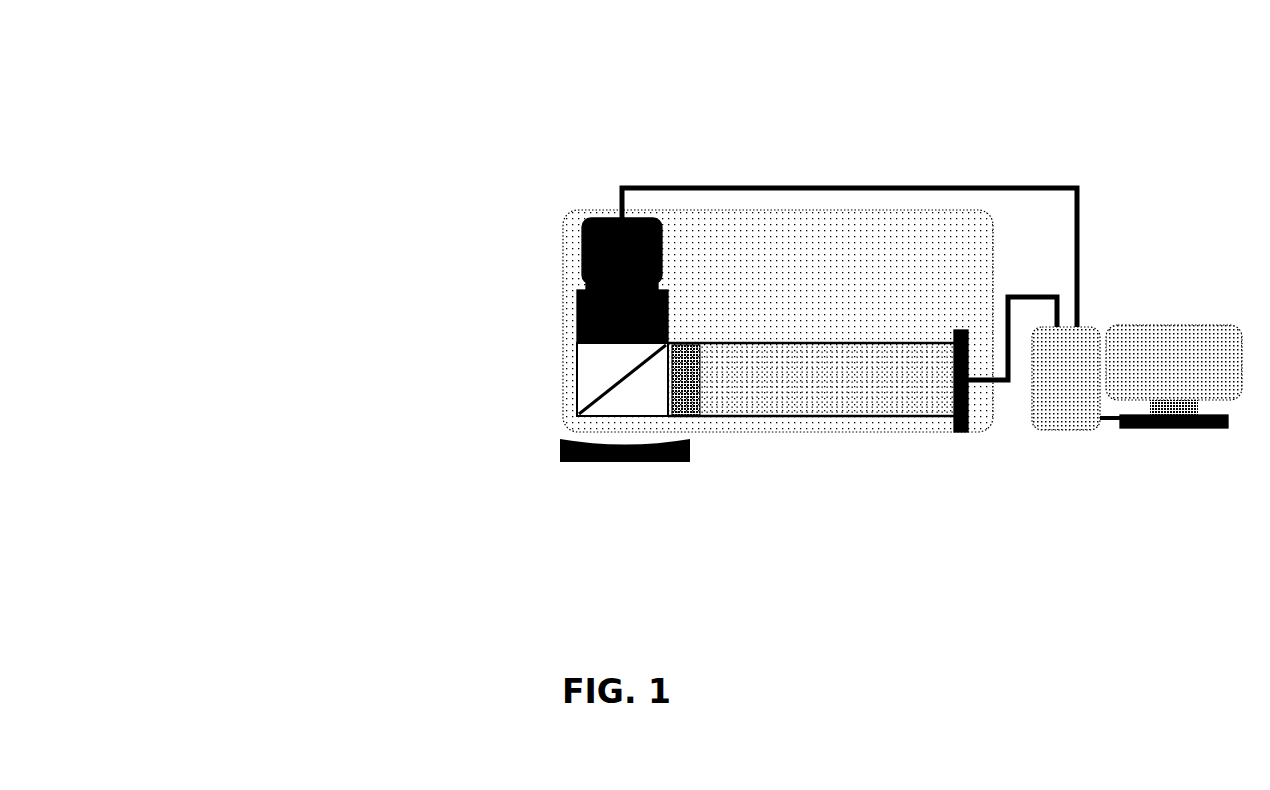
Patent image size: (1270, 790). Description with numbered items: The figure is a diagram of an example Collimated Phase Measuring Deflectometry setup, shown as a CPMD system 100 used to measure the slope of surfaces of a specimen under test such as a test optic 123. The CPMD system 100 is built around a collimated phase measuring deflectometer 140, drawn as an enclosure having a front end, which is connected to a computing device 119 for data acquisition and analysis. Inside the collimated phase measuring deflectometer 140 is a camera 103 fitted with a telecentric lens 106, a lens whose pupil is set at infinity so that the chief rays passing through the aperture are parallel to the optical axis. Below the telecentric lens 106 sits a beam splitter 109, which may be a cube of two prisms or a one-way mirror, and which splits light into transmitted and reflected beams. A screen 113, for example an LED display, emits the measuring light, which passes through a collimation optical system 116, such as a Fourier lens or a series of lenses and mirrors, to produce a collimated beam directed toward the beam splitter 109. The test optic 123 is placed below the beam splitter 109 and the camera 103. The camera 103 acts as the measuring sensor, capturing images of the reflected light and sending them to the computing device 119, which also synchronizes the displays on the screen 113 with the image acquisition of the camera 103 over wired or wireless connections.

The CPMD system 100 is at (552, 88).
The camera 103 is at (583, 248).
The telecentric lens 106 is at (577, 315).
The beam splitter 109 is at (577, 393).
The screen 113 is at (957, 432).
The collimation optical system 116 is at (705, 372).
The computing device 119 is at (1065, 430).
The test optic 123 is at (580, 462).
The collimated phase measuring deflectometer 140 is at (560, 412).